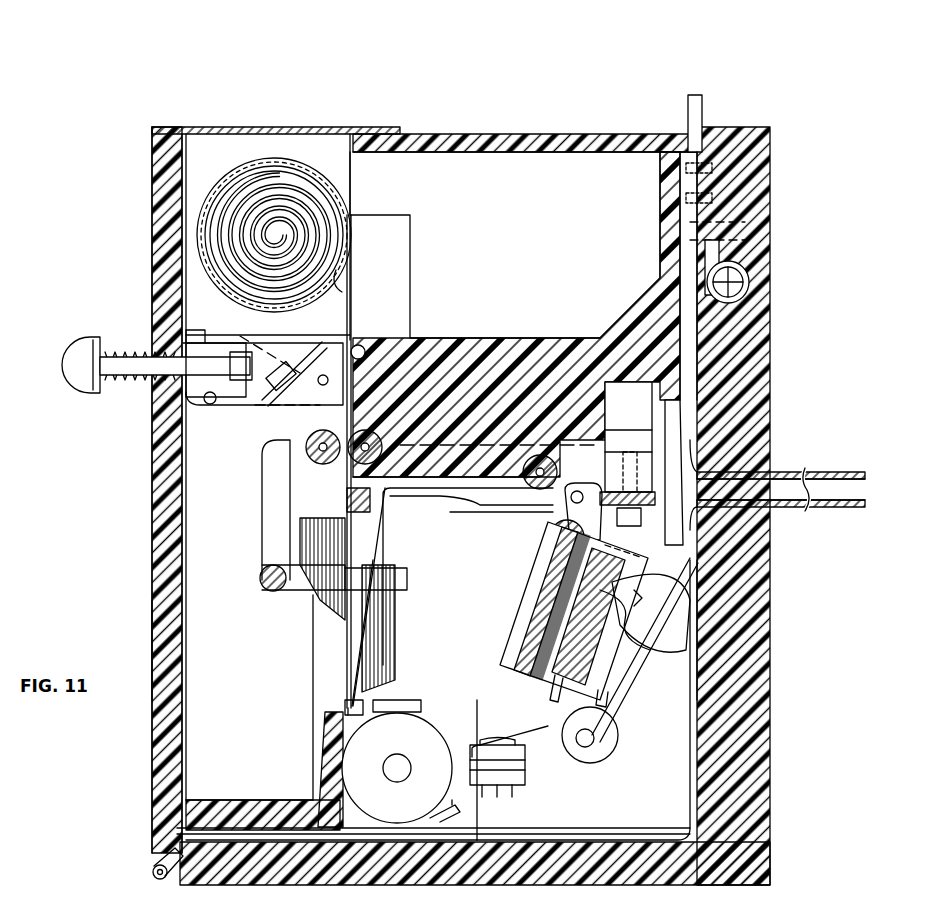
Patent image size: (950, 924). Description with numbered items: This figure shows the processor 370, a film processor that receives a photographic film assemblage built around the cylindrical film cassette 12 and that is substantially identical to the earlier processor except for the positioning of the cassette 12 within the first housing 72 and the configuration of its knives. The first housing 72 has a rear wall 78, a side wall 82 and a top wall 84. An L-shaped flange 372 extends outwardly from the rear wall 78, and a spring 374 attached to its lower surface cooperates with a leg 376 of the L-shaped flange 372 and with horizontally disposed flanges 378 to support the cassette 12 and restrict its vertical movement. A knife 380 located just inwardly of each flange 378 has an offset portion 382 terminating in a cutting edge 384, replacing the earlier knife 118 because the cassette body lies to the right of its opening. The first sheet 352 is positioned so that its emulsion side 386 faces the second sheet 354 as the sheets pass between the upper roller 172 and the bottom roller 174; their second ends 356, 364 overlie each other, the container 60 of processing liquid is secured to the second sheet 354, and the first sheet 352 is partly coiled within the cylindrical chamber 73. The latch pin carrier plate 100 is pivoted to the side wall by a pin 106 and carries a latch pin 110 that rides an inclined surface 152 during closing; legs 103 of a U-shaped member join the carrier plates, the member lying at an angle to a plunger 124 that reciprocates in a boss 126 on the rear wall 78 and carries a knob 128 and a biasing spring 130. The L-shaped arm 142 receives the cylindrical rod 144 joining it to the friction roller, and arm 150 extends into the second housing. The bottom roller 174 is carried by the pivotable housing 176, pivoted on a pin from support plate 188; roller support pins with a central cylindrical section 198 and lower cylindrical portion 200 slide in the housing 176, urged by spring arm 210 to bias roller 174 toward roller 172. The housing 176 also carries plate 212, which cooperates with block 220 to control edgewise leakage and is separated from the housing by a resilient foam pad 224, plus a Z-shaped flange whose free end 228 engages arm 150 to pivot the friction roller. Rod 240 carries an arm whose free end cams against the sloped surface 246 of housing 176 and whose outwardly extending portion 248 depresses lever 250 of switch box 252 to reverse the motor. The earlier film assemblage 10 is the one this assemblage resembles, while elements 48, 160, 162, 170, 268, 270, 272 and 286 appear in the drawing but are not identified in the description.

The film assemblage 10 is at (340, 705).
The film cassette 12 is at (448, 740).
The spiral spring 48 is at (290, 190).
The container of processing liquid 60 is at (505, 505).
The first housing 72 is at (358, 190).
The cylindrical chamber 73 is at (240, 172).
The rear wall 78 is at (152, 624).
The side wall 82 is at (274, 697).
The top wall 84 is at (320, 127).
The latch pin carrier plate 100 is at (250, 405).
The leg of U-shaped member 103 is at (315, 390).
The pin 106 is at (213, 405).
The latch pin 110 is at (370, 350).
The knife 118 is at (335, 600).
The plunger 124 is at (262, 358).
The boss 126 is at (196, 330).
The knob 128 is at (88, 340).
The spring 130 is at (140, 348).
The L-shaped arm 142 is at (262, 500).
The cylindrical rod 144 is at (310, 450).
The arm 150 is at (405, 585).
The inclined surface 152 is at (240, 322).
The chamber 160 is at (505, 245).
The top wall 162 is at (545, 128).
The outlet tube 170 is at (795, 472).
The upper roller 172 is at (560, 467).
The bottom roller 174 is at (555, 560).
The housing 176 is at (628, 620).
The support plate 188 is at (450, 510).
The central cylindrical section 198 is at (651, 613).
The lower cylindrical portion 200 is at (700, 566).
The spring arm 210 is at (686, 658).
The plate 212 is at (530, 640).
The block 220 is at (425, 512).
The resilient foam pad 224 is at (545, 600).
The free end 228 is at (552, 692).
The rod 240 is at (595, 745).
The sloped surface 246 is at (705, 612).
The outwardly extending portion 248 is at (618, 735).
The switch lever 250 is at (520, 725).
The switch box 252 is at (525, 780).
The actuating lever 268 is at (672, 250).
The rod 270 is at (712, 135).
The clips 272 is at (715, 198).
The bearing 286 is at (745, 262).
The first sheet 352 is at (351, 298).
The second sheet 354 is at (380, 610).
The second end of first sheet 356 is at (525, 512).
The second end of second sheet 364 is at (552, 540).
The processor 370 is at (140, 140).
The L-shaped flange 372 is at (238, 800).
The spring 374 is at (285, 836).
The leg 376 is at (322, 735).
The horizontally disposed flange 378 is at (405, 706).
The knife 380 is at (300, 528).
The offset portion 382 is at (400, 640).
The cutting edge 384 is at (400, 680).
The emulsion side 386 is at (340, 265).